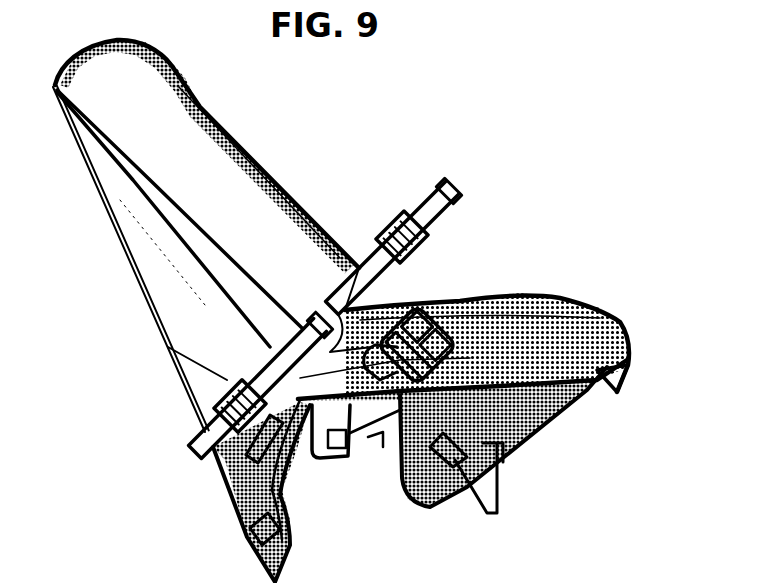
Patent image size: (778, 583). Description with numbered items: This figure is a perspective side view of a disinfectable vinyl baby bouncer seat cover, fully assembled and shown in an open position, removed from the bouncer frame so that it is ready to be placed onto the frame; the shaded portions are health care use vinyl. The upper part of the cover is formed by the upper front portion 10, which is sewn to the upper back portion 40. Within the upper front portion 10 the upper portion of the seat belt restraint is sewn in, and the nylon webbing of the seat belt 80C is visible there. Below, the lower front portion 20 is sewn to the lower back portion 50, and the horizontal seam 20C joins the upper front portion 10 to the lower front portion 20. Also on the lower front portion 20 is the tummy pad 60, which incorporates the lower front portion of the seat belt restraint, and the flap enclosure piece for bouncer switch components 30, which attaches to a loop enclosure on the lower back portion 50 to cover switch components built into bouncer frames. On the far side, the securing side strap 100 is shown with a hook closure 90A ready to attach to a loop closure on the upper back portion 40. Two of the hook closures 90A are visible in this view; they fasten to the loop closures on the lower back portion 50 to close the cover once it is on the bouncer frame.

The upper front portion 10 is at (233, 160).
The upper back portion 40 is at (166, 263).
The nylon webbing of the seat belt 80C is at (422, 198).
The lower front portion 20 is at (534, 337).
The horizontal seam 20C is at (406, 302).
The tummy pad 60 is at (463, 322).
The flap enclosure piece for bouncer switch components 30 is at (627, 370).
The lower back portion 50 is at (541, 400).
The securing side strap 100 is at (381, 447).
The hook closure 90A is at (333, 457).